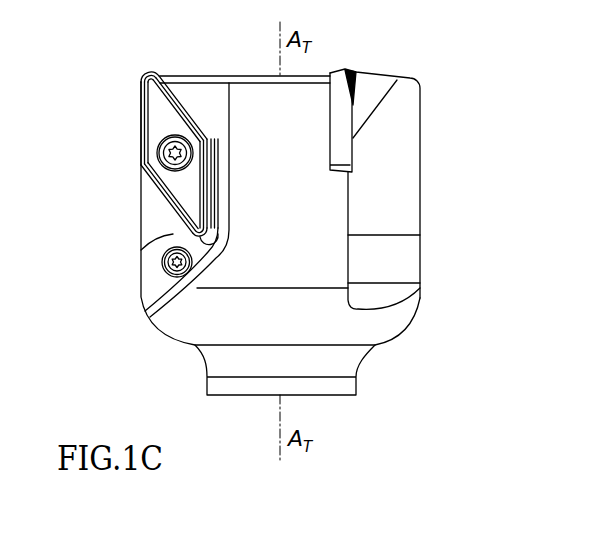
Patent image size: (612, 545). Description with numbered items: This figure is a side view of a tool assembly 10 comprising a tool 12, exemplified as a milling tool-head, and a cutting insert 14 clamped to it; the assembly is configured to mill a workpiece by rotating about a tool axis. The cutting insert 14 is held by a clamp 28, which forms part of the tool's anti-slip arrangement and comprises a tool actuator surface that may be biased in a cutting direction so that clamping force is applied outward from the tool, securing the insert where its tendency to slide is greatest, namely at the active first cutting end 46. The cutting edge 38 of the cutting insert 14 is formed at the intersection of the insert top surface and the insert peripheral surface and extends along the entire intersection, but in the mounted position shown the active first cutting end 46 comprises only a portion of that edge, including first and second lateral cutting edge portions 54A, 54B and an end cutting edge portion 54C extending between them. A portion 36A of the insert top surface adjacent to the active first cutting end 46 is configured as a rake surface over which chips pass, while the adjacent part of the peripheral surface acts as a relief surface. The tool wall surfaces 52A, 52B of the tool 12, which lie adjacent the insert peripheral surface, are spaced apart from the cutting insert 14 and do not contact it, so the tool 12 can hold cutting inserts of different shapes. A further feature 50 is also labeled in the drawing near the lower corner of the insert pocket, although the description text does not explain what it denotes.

The tool assembly 10 is at (440, 56).
The tool 12 is at (148, 233).
The cutting insert 14 is at (153, 117).
The clamp 28 is at (167, 240).
The portion of the insert top surface 36A is at (158, 78).
The cutting edge 38 is at (148, 72).
The active first cutting end 46 is at (131, 80).
The corner relief 50 is at (214, 245).
The tool wall surface 52A is at (156, 199).
The tool wall surface 52B is at (220, 203).
The first lateral cutting edge portion 54A is at (131, 93).
The second lateral cutting edge portion 54B is at (185, 95).
The end cutting edge portion 54C is at (138, 66).